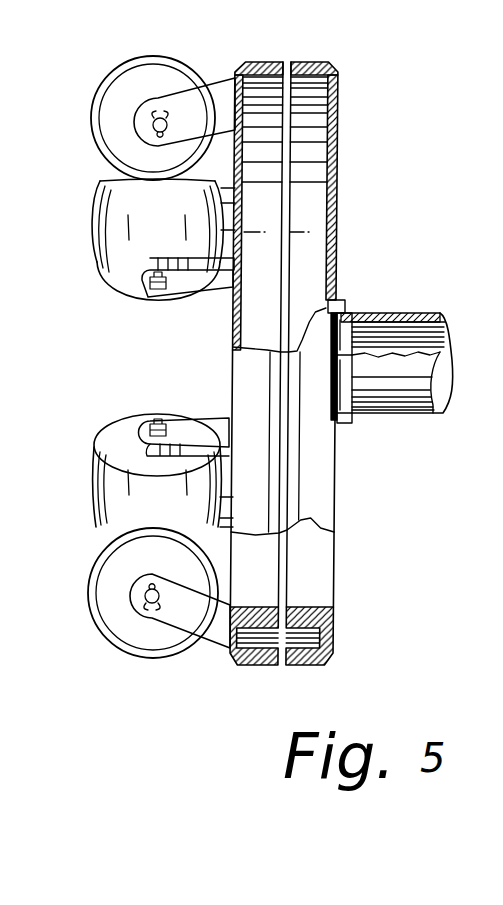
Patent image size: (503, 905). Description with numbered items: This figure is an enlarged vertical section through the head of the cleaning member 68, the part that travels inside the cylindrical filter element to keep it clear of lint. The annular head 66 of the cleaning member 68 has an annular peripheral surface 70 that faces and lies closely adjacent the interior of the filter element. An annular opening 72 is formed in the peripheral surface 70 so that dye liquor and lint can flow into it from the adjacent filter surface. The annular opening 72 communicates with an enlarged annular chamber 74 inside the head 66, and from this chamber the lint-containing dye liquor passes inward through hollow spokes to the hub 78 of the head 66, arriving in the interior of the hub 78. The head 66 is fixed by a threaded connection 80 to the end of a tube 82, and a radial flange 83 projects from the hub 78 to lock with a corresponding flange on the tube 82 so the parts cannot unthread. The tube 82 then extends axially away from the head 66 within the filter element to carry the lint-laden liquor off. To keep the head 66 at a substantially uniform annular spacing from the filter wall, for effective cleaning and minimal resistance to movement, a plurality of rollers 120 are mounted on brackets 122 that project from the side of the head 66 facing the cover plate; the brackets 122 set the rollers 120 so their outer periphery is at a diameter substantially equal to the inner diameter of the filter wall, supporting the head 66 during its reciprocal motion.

The annular head 66 is at (340, 489).
The cleaning member 68 is at (367, 224).
The annular peripheral surface 70 is at (314, 60).
The annular opening 72 is at (292, 61).
The annular chamber 74 is at (324, 104).
The hub 78 is at (354, 312).
The threaded connection 80 is at (364, 312).
The tube 82 is at (438, 312).
The radial flange 83 is at (338, 275).
The rollers 120 is at (95, 243).
The brackets 122 is at (206, 300).